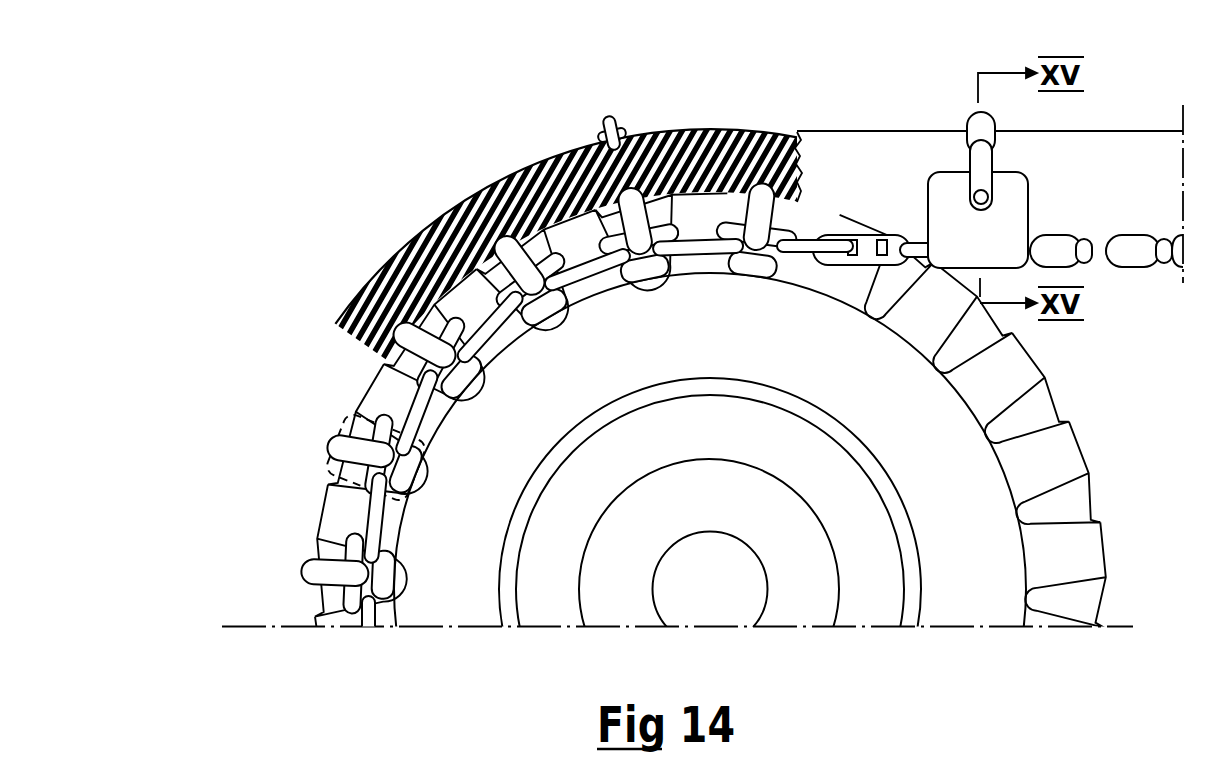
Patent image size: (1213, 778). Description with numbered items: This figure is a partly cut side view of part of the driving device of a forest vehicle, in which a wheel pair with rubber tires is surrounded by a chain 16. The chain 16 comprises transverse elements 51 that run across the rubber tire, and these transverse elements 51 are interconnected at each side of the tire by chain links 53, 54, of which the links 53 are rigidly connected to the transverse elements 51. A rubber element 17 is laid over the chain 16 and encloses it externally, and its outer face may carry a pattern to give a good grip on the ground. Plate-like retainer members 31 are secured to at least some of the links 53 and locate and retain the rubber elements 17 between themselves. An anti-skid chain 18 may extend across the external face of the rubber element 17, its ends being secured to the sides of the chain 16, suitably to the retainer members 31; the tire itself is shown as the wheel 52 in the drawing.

The chain 16 is at (1120, 267).
The rubber element 17 is at (729, 133).
The anti-skid chain 18 is at (616, 120).
The retainer member 31 is at (943, 212).
The transverse element 51 is at (322, 568).
The tire 52 is at (443, 587).
The chain link 53 is at (479, 327).
The chain link 54 is at (487, 334).